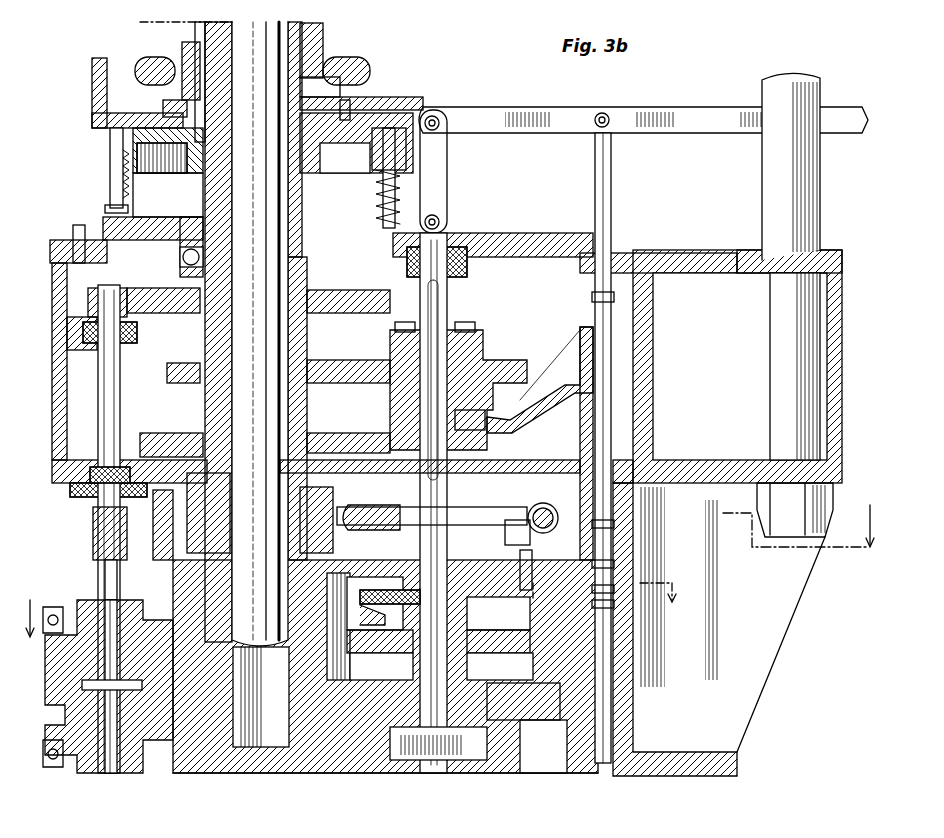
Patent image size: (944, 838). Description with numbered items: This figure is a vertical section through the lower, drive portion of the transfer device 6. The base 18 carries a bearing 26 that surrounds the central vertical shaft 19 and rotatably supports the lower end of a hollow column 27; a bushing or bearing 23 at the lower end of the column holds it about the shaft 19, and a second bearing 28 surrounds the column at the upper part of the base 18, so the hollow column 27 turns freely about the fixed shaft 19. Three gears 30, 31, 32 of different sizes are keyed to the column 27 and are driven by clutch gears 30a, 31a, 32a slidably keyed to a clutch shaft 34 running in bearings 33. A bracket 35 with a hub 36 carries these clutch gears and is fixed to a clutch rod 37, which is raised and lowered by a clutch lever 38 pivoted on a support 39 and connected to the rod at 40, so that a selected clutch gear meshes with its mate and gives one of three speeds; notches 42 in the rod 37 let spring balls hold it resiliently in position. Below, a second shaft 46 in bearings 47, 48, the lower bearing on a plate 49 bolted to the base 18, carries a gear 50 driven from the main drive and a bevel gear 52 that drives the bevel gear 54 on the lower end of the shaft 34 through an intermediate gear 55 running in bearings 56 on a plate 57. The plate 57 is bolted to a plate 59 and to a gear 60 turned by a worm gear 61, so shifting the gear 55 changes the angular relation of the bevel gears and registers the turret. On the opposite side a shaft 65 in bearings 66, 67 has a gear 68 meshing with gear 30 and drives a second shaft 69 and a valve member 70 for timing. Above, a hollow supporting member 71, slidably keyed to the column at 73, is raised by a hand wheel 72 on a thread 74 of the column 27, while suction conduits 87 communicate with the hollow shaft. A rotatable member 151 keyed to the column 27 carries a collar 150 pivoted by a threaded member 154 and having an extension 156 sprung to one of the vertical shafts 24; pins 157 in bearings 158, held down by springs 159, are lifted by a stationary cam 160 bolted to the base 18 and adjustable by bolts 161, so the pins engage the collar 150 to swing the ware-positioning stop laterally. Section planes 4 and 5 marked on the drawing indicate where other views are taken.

The section line 4- 4 is at (448, 585).
The section line 5- 5 is at (606, 602).
The transfer device 6 is at (725, 92).
The base 18 is at (785, 643).
The vertical shaft 19 is at (251, 334).
The bushing or bearing 23 is at (330, 470).
The vertical shaft 24 is at (762, 194).
The bearing 26 is at (187, 505).
The hollow column 27 is at (208, 186).
The second bearing 28 is at (182, 258).
The gear 30 is at (348, 336).
The clutch gear 30a is at (470, 332).
The gear 31 is at (185, 385).
The clutch gear 31a is at (505, 363).
The gear 32 is at (188, 440).
The clutch gear 32a is at (348, 427).
The bearings 33 is at (455, 236).
The clutch shaft 34 is at (448, 294).
The bracket 35 is at (568, 400).
The hub 36 is at (480, 420).
The clutch rod 37 is at (595, 298).
The clutch lever 38 is at (678, 133).
The support 39 is at (440, 162).
The connection to clutch rod 40 is at (606, 113).
The notches 42 is at (630, 535).
The second shaft 46 is at (415, 760).
The bearing 47 is at (395, 655).
The bearing 48 is at (392, 594).
The plate 49 is at (507, 720).
The gear 50 is at (485, 648).
The bevel gear 52 is at (371, 616).
The bevel gear 54 is at (445, 510).
The gear 55 is at (537, 508).
The bearings 56 is at (630, 568).
The plate 57 is at (290, 650).
The plate 59 is at (385, 512).
The gear 60 is at (510, 505).
The worm gear 61 is at (555, 508).
The shaft 65 is at (112, 374).
The bearing 66 is at (137, 332).
The bearing 67 is at (96, 467).
The gear 68 is at (88, 300).
The second shaft 69 is at (105, 576).
The valve member 70 is at (98, 770).
The hollow supporting member 71 is at (195, 30).
The hand wheel 72 is at (163, 105).
The key 73 is at (323, 40).
The thread 74 is at (160, 62).
The outlets or conduits 87 is at (510, 605).
The collar 150 is at (92, 74).
The rotatable member 151 is at (368, 128).
The threaded member 154 is at (348, 100).
The extension 156 is at (418, 100).
The pins 157 is at (92, 118).
The bearings 158 is at (110, 140).
The springs 159 is at (110, 182).
The stationary cam 160 is at (105, 220).
The bolts 161 is at (73, 222).